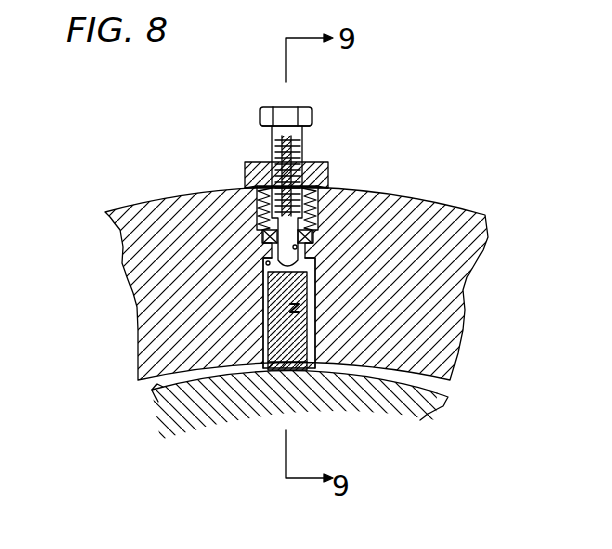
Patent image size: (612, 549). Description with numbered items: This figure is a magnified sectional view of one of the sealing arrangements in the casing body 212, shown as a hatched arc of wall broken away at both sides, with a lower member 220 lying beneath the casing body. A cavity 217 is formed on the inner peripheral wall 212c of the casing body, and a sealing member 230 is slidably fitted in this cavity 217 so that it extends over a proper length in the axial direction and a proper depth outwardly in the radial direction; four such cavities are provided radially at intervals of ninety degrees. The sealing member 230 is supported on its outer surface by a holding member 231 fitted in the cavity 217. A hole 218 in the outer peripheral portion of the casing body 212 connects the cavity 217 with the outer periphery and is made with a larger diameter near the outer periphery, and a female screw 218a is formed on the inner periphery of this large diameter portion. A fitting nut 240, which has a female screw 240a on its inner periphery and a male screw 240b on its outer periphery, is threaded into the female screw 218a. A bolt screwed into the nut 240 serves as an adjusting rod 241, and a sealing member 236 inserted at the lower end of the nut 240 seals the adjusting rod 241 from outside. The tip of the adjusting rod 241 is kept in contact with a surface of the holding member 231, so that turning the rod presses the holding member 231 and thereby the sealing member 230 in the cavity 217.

The casing body 212 is at (163, 222).
The inner peripheral wall 212c is at (447, 400).
The cavity 217 is at (263, 267).
The hole 218 is at (309, 250).
The female screw 218a is at (314, 223).
The lower member 220 is at (178, 395).
The sealing member 230 is at (297, 366).
The holding member 231 is at (275, 291).
The sealing member 236 is at (260, 238).
The fitting nut 240 is at (313, 160).
The female screw 240a is at (263, 165).
The male screw 240b is at (262, 208).
The adjusting rod 241 is at (303, 130).